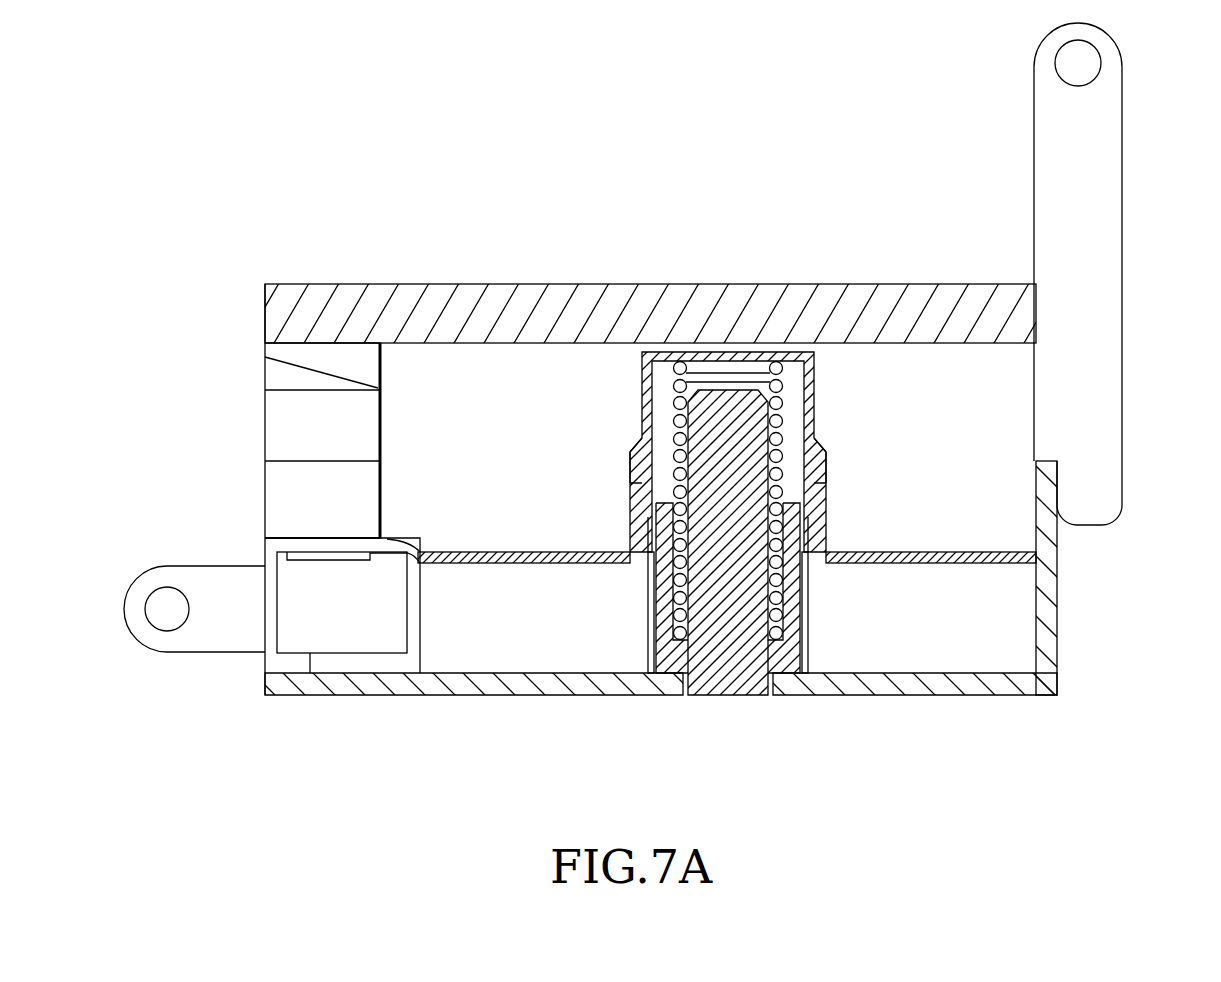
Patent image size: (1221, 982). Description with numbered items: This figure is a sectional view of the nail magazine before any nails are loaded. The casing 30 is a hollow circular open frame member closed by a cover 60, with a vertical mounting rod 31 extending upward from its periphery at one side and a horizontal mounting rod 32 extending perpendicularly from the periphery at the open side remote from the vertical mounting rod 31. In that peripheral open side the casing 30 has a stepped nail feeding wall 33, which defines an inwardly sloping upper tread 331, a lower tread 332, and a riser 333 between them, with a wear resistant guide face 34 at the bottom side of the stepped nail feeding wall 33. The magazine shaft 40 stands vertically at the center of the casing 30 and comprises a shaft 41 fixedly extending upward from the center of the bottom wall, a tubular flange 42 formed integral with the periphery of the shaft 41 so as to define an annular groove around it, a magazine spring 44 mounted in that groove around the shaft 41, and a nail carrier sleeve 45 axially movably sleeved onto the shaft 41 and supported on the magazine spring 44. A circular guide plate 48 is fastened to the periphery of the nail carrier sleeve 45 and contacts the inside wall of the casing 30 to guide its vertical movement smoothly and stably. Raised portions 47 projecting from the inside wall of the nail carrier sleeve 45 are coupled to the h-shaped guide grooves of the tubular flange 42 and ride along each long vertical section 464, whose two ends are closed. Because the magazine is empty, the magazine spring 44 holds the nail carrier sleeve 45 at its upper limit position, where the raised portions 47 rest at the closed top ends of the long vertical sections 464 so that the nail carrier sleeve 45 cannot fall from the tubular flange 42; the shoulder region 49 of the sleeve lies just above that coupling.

The casing 30 is at (1058, 570).
The vertical mounting rod 31 is at (1110, 200).
The horizontal mounting rod 32 is at (185, 566).
The stepped nail feeding wall 33 is at (322, 385).
The inwardly sloping upper tread 331 is at (332, 375).
The lower tread 332 is at (373, 500).
The riser 333 is at (288, 424).
The wear resistant guide face 34 is at (313, 555).
The magazine shaft 40 is at (739, 520).
The shaft 41 is at (747, 430).
The tubular flange 42 is at (792, 588).
The magazine spring 44 is at (630, 463).
The nail carrier sleeve 45 is at (642, 384).
The raised portion 47 is at (643, 568).
The circular guide plate 48 is at (538, 550).
The cap shoulder 49 is at (637, 438).
The cover 60 is at (746, 283).
The long vertical section 464 is at (652, 642).